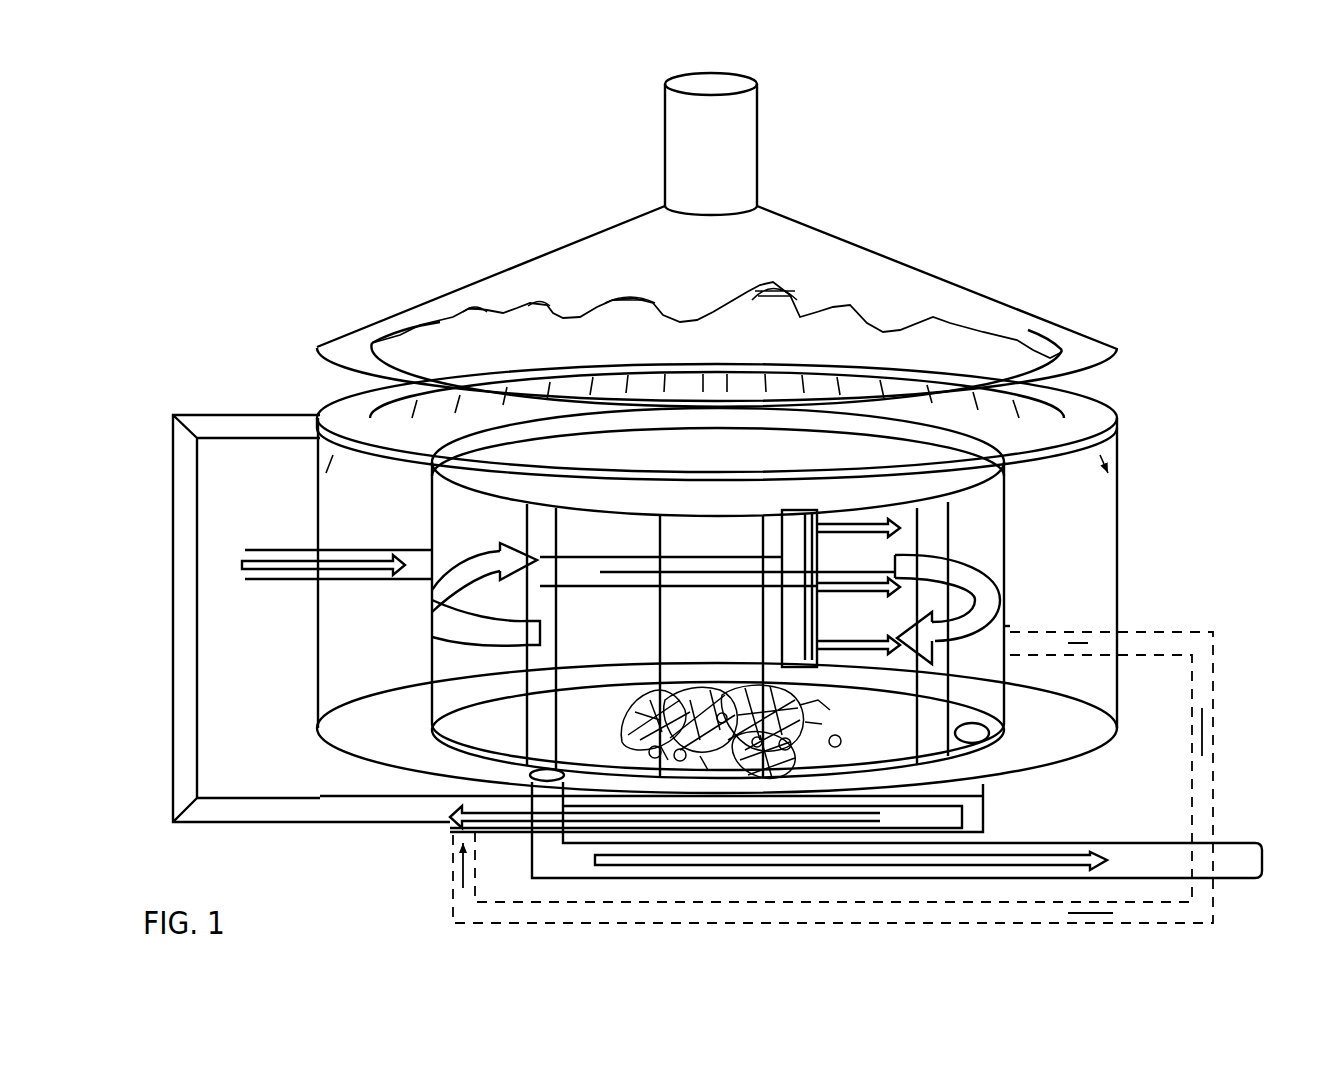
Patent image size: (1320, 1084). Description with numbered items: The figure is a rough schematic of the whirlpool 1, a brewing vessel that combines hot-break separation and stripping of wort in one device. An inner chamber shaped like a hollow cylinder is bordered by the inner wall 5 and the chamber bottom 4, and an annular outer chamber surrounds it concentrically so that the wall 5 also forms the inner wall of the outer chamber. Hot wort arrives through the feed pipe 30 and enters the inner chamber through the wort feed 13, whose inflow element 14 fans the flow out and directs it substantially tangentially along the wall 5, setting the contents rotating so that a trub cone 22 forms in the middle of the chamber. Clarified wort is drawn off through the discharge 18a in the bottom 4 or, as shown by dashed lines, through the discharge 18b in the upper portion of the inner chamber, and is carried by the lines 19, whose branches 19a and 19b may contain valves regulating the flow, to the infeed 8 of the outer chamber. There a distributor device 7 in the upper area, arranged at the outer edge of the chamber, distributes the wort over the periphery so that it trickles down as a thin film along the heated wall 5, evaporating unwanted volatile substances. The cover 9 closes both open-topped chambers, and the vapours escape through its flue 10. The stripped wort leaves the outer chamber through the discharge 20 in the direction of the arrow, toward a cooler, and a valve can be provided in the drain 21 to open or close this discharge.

The whirlpool 1 is at (478, 242).
The chamber bottom 4 is at (1071, 757).
The inner wall 5 is at (1003, 505).
The distributor device 7 is at (1098, 404).
The infeed 8 is at (316, 418).
The cover 9 is at (862, 253).
The flue 10 is at (680, 78).
The wort feed 13 is at (763, 557).
The inflow element 14 is at (818, 553).
The discharge 18a is at (990, 733).
The discharge 18b is at (1005, 626).
The control unit 19 is at (173, 727).
The line 19a is at (985, 818).
The line 19b is at (1215, 712).
The discharge 20 is at (547, 769).
The drain 21 is at (532, 850).
The trub cone 22 is at (812, 712).
The feed pipe 30 is at (372, 552).